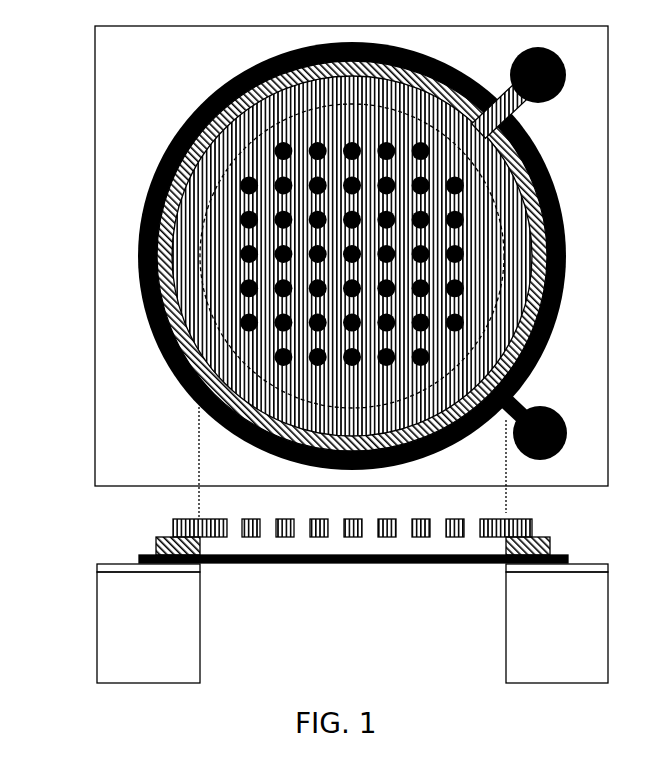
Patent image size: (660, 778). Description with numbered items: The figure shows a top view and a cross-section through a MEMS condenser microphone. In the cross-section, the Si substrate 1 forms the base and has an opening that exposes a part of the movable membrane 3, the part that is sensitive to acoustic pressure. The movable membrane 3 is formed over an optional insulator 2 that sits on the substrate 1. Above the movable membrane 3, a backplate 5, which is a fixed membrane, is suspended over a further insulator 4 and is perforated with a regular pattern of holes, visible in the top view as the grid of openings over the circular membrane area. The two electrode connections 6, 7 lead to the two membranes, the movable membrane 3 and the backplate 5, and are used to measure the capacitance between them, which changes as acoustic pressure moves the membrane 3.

The Si substrate 1 is at (115, 632).
The insulator 2 is at (95, 569).
The movable membrane 3 is at (137, 558).
The further insulator 4 is at (135, 542).
The backplate 5 is at (173, 530).
The electrode connection 6 is at (538, 103).
The electrode connection 7 is at (547, 404).